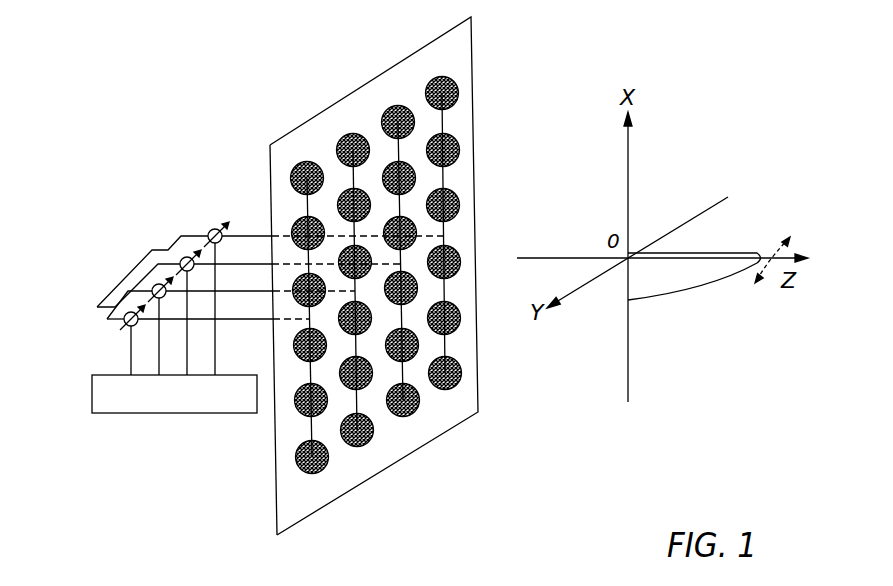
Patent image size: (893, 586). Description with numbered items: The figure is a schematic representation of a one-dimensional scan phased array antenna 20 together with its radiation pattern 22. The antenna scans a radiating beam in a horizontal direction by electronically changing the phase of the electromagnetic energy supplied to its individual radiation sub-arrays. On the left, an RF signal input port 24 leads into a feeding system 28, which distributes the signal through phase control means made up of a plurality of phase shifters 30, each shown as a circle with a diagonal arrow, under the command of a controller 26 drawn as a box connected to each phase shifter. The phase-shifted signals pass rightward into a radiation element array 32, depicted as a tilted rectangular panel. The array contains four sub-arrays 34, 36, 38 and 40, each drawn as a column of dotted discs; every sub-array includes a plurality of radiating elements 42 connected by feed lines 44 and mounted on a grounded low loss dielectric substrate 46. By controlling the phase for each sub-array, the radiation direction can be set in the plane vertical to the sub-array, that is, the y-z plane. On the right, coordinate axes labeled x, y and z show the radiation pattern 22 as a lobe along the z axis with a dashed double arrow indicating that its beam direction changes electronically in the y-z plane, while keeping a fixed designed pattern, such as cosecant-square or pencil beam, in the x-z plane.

The one-dimensional scan phased array antenna 20 is at (222, 133).
The radiation pattern 22 is at (698, 288).
The RF signal input port 24 is at (126, 277).
The controller 26 is at (165, 415).
The feeding system 28 is at (114, 192).
The phase shifters 30 is at (206, 236).
The radiation element array 32 is at (542, 60).
The sub-array 34 is at (312, 473).
The sub-array 36 is at (357, 446).
The sub-array 38 is at (403, 416).
The sub-array 40 is at (445, 389).
The radiating elements 42 is at (442, 76).
The feed lines 44 is at (401, 203).
The grounded low loss dielectric substrate 46 is at (277, 485).